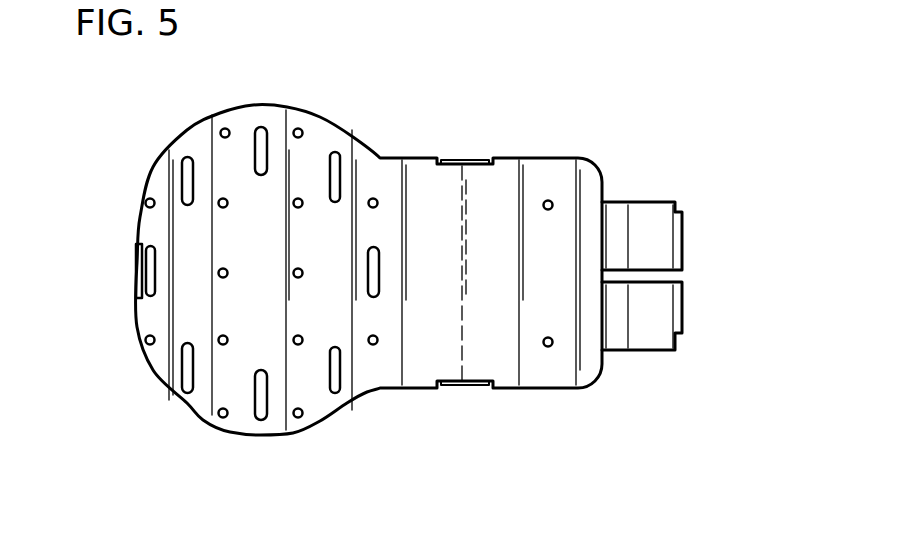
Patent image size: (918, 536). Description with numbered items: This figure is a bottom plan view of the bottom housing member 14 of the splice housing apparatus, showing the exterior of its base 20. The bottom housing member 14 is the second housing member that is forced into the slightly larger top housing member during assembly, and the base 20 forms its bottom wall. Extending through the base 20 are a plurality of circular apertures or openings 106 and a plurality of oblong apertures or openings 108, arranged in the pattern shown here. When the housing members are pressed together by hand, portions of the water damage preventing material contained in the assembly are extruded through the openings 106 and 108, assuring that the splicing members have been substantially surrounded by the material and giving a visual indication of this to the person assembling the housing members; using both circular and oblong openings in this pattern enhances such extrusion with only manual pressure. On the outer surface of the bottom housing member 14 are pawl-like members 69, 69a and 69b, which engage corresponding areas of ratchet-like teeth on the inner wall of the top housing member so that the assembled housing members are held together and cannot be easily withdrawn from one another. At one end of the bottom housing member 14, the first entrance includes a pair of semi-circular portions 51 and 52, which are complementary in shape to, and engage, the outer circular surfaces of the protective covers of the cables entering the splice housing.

The bottom housing member 14 is at (583, 158).
The base 20 is at (480, 289).
The semi-circular portion 51 is at (683, 317).
The semi-circular portion 52 is at (683, 233).
The pawl-like member 69 is at (463, 157).
The pawl-like member 69a is at (136, 268).
The pawl-like member 69b is at (463, 389).
The circular apertures 106 is at (294, 129).
The oblong apertures 108 is at (150, 244).